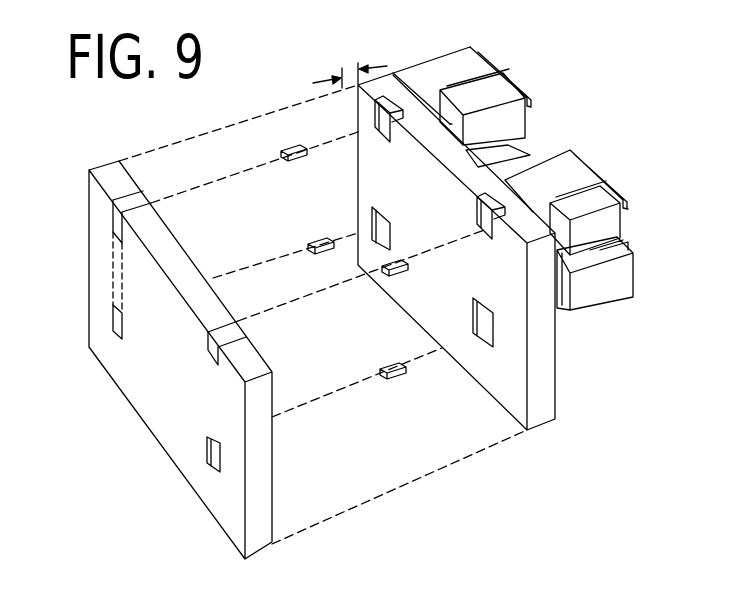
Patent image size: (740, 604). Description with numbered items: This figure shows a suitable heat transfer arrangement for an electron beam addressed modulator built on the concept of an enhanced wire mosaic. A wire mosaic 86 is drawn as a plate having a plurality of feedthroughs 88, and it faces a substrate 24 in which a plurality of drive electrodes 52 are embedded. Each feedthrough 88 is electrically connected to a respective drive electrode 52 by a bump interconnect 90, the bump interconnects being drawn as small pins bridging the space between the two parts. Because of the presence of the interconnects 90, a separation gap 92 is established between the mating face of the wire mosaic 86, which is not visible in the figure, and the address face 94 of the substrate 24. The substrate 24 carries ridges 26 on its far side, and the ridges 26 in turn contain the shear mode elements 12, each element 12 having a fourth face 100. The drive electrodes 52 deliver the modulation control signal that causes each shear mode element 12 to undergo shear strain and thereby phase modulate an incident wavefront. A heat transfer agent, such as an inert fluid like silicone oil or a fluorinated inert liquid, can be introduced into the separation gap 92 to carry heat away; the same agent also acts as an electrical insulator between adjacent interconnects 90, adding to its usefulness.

The shear mode element 12 is at (480, 98).
The substrate 24 is at (540, 400).
The ridge 26 is at (461, 65).
The drive electrode 52 is at (388, 100).
The wire mosaic 86 is at (207, 474).
The feedthrough 88 is at (110, 217).
The bump interconnect 90 is at (298, 162).
The separation gap 92 is at (353, 75).
The address face 94 is at (511, 374).
The fourth face 100 is at (452, 122).